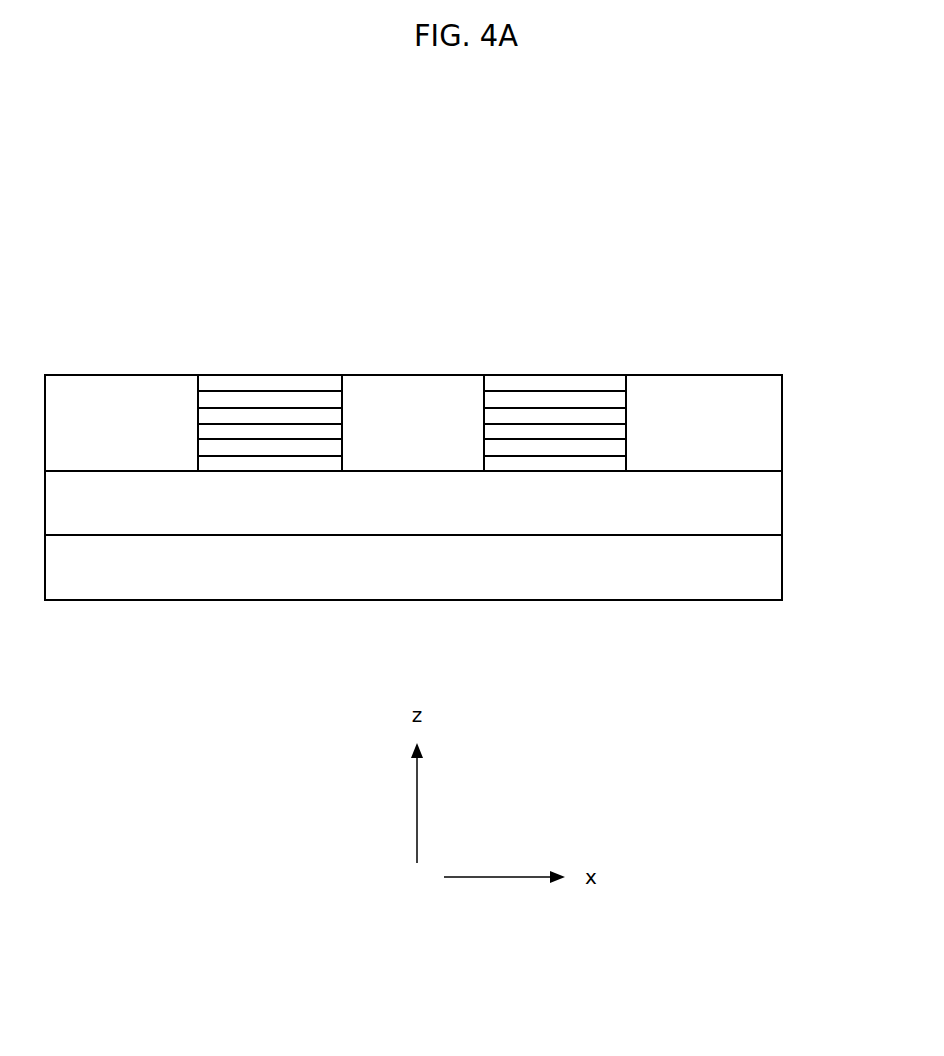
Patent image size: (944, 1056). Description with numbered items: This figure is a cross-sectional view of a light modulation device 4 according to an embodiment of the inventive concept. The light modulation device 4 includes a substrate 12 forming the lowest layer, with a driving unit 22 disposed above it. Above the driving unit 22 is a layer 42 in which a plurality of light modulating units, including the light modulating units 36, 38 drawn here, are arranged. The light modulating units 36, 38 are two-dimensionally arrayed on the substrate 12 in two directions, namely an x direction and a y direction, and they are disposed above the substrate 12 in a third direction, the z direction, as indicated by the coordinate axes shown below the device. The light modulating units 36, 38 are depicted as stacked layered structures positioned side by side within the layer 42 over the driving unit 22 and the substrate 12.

The light modulation device 4 is at (710, 263).
The substrate 12 is at (762, 573).
The driving unit 22 is at (762, 503).
The device layer 42 is at (762, 445).
The light modulating unit 36 is at (210, 393).
The light modulating unit 38 is at (618, 397).